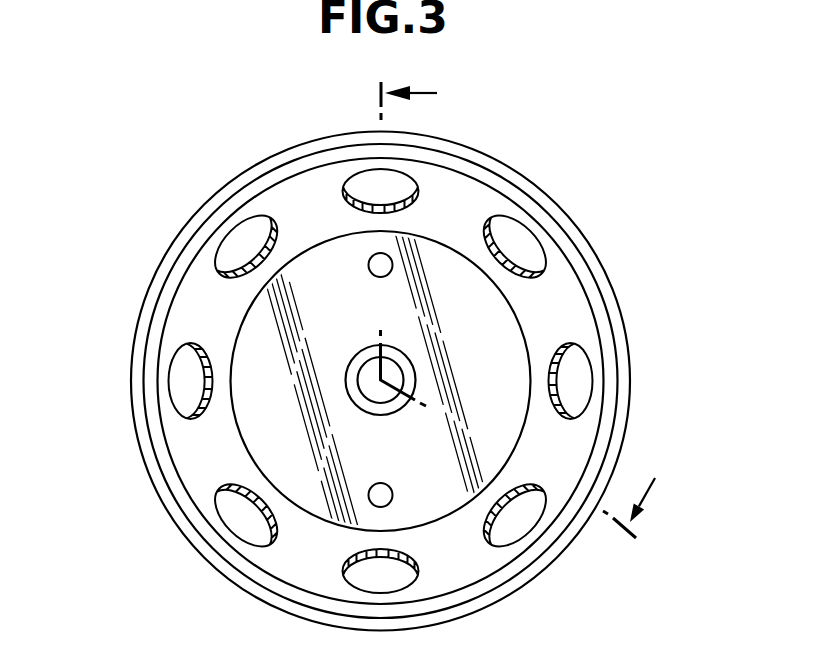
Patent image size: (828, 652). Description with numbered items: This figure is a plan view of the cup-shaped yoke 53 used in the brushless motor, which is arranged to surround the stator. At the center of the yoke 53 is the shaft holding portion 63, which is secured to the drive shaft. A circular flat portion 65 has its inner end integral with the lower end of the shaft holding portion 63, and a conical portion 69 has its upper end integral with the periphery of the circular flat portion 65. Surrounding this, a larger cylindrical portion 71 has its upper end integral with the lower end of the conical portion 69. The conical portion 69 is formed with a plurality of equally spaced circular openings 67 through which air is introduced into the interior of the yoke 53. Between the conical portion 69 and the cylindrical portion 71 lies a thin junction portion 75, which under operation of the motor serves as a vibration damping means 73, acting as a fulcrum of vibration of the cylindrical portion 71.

The yoke 53 is at (238, 173).
The shaft holding portion 63 is at (415, 362).
The circular flat portion 65 is at (488, 309).
The circular openings 67 is at (179, 387).
The conical portion 69 is at (588, 333).
The larger cylindrical portion 71 is at (578, 223).
The vibration damping means 73 is at (503, 183).
The junction portion 75 is at (183, 259).